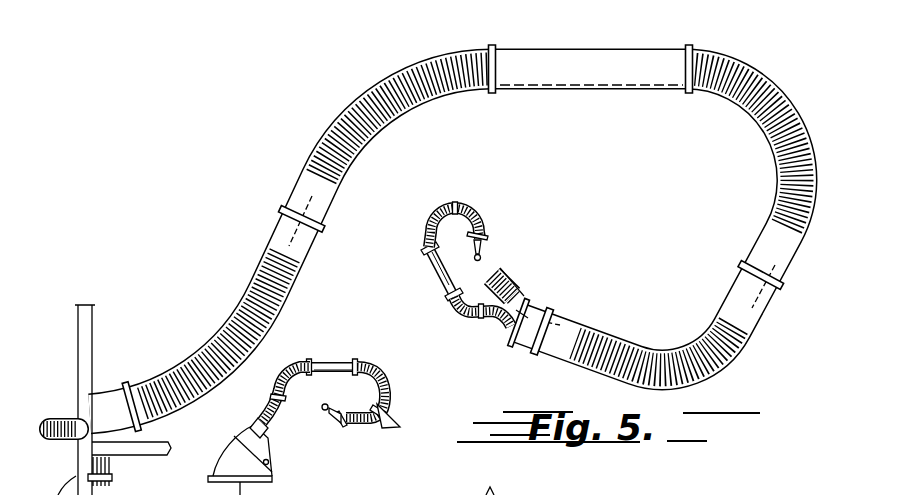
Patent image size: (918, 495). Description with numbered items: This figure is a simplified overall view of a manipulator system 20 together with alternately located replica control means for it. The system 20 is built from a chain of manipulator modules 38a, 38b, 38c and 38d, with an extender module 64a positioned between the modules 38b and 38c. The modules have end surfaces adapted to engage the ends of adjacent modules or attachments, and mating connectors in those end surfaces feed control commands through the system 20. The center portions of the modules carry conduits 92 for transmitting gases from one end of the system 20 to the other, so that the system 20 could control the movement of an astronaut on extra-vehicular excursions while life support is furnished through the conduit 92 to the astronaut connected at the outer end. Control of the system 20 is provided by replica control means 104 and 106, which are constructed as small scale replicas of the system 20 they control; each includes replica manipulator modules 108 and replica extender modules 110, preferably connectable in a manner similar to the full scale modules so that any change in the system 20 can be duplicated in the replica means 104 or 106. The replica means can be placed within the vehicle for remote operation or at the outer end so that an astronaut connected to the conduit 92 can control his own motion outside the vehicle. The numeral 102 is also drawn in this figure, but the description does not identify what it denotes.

The manipulator system 20 is at (284, 194).
The manipulator module 38a is at (216, 333).
The manipulator module 38b is at (381, 74).
The manipulator module 38c is at (778, 83).
The manipulator module 38d is at (736, 352).
The extender module 64a is at (603, 49).
The conduit 92 is at (57, 417).
The lamp assembly 102 is at (325, 489).
The replica control means 104 is at (274, 424).
The replica control means 106 is at (466, 324).
The replica manipulator module 108 is at (467, 206).
The replica extender module 110 is at (433, 262).